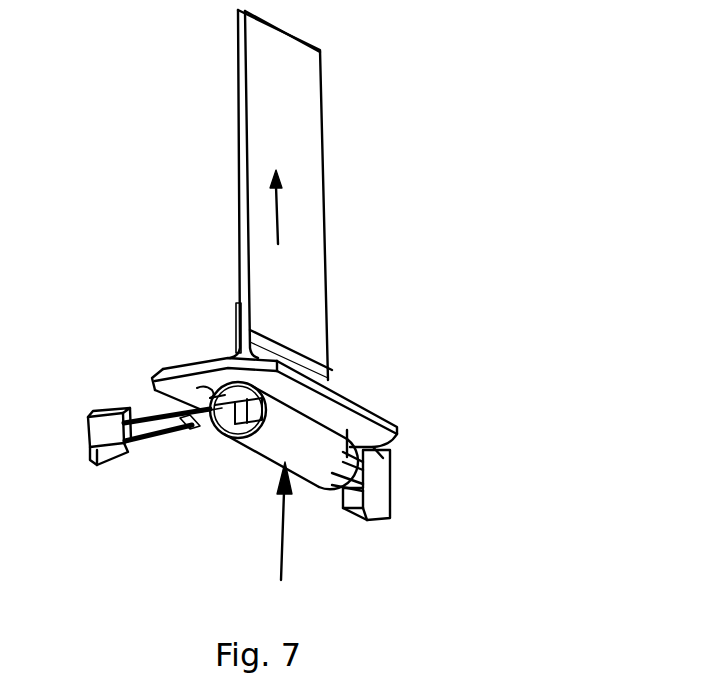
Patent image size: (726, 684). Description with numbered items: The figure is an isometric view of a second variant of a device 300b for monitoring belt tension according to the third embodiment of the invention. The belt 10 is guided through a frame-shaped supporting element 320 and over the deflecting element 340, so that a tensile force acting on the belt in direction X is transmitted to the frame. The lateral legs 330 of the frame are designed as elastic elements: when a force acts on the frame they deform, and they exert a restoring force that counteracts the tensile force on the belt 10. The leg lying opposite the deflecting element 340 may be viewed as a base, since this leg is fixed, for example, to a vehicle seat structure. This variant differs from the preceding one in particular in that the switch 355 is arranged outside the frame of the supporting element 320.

The belt 10 is at (290, 130).
The device for monitoring belt tension 300b is at (462, 212).
The frame-shaped supporting element 320 is at (343, 418).
The lateral legs 330 is at (233, 392).
The deflecting element 340 is at (345, 487).
The switch 355 is at (150, 440).